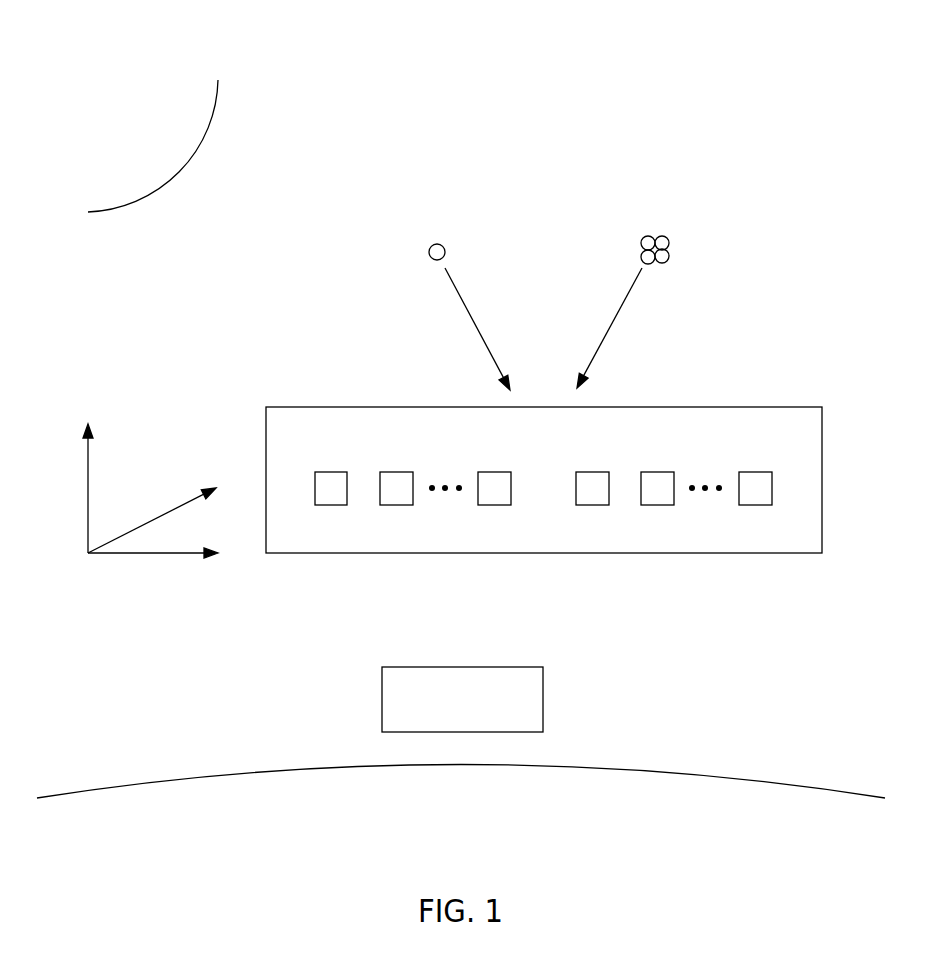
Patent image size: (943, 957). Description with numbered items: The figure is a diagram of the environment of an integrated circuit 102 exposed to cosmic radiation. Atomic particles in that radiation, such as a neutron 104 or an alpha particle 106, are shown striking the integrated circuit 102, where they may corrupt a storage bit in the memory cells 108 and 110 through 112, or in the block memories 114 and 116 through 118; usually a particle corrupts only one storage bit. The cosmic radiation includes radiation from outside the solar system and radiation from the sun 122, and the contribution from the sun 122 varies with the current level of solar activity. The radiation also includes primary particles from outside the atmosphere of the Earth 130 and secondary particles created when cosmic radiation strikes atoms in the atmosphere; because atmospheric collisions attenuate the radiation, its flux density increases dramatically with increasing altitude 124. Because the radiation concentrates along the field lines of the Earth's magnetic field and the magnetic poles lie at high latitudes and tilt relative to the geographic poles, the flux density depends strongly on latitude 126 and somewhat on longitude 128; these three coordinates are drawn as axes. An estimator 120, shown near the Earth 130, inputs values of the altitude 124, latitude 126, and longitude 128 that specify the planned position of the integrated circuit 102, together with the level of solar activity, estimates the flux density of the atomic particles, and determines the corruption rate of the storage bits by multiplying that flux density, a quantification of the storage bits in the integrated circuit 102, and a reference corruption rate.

The integrated circuit 102 is at (320, 405).
The neutron 104 is at (438, 243).
The alpha particle 106 is at (655, 237).
The memory cell 108 is at (337, 472).
The memory cell 110 is at (406, 472).
The memory cell 112 is at (500, 472).
The block memory 114 is at (599, 472).
The block memory 116 is at (667, 472).
The block memory 118 is at (762, 472).
The estimator 120 is at (435, 666).
The sun 122 is at (183, 168).
The altitude 124 is at (87, 462).
The latitude 126 is at (185, 503).
The longitude 128 is at (185, 555).
The Earth 130 is at (435, 763).